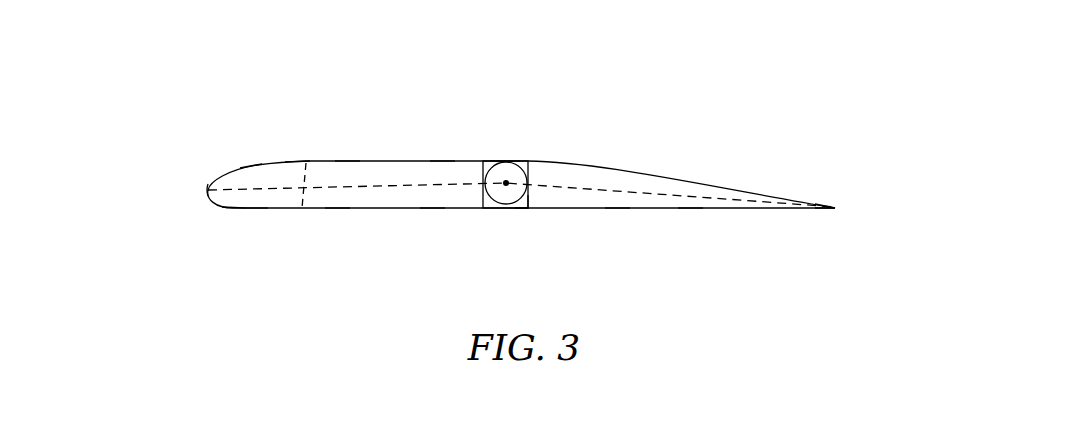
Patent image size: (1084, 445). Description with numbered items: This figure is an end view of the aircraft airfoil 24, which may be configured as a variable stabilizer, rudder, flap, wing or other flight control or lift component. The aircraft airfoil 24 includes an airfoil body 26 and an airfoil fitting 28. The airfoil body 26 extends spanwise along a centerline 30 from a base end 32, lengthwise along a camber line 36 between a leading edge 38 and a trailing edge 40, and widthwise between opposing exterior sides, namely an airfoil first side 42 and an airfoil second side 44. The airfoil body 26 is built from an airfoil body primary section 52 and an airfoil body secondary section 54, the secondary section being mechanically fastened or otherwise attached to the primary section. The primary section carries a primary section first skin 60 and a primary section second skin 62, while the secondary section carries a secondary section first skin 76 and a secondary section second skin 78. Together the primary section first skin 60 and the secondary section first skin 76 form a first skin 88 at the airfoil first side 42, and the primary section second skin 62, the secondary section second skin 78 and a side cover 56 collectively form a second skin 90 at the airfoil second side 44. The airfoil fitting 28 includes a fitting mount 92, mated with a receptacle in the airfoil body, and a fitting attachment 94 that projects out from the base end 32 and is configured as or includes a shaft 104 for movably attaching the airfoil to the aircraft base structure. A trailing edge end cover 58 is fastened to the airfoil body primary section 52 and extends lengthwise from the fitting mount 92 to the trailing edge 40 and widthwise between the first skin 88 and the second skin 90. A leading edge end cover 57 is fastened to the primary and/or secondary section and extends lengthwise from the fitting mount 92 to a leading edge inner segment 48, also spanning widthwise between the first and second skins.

The aircraft airfoil 24 is at (152, 97).
The airfoil body 26 is at (293, 150).
The airfoil fitting 28 is at (530, 156).
The centerline 30 is at (506, 186).
The base end 32 is at (360, 195).
The camber line 36 is at (398, 185).
The leading edge 38 is at (195, 202).
The trailing edge 40 is at (835, 208).
The airfoil first side 42 is at (443, 255).
The first skin 88 is at (433, 220).
The airfoil second side 44 is at (443, 111).
The second skin 90 is at (442, 160).
The leading edge inner segment 48 is at (208, 190).
The airfoil body primary section 52 is at (690, 224).
The airfoil body secondary section 54 is at (226, 220).
The side cover 56 is at (643, 170).
The leading edge end cover 57 is at (305, 207).
The trailing edge end cover 58 is at (618, 218).
The primary section first skin 60 is at (338, 210).
The primary section second skin 62 is at (347, 160).
The secondary section first skin 76 is at (255, 209).
The secondary section second skin 78 is at (257, 165).
The fitting mount 92 is at (526, 206).
The fitting attachment 94 is at (528, 116).
The shaft 104 is at (503, 160).